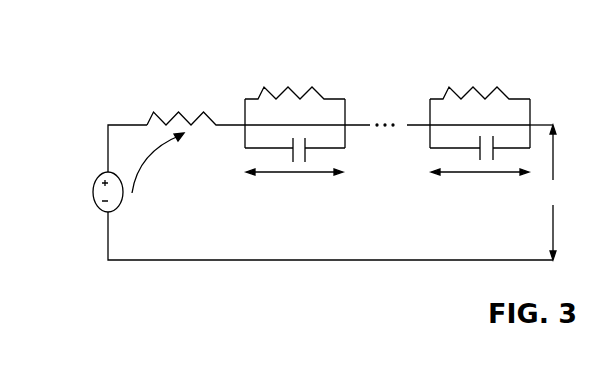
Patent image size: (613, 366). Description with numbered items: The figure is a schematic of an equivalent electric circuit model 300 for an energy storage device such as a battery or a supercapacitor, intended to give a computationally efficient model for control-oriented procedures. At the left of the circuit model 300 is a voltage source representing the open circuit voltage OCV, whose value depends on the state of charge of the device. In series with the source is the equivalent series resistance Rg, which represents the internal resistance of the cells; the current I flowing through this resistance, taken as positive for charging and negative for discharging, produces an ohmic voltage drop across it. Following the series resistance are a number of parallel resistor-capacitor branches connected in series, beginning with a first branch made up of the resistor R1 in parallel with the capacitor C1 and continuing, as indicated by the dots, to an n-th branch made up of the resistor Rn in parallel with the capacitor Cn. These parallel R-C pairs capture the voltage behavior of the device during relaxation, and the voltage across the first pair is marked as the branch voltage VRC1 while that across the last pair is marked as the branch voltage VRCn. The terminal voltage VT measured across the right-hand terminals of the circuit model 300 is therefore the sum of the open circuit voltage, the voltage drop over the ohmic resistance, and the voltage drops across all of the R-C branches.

The equivalent electric circuit model 300 is at (393, 44).
The equivalent series resistance Rg is at (196, 108).
The open circuit voltage OCV is at (87, 192).
The current I is at (158, 163).
The first branch resistor R1 is at (295, 83).
The first branch capacitor C1 is at (295, 139).
The first R-C branch voltage VRC1 is at (294, 185).
The n-th branch resistor Rn is at (480, 83).
The n-th branch capacitor Cn is at (480, 138).
The n-th R-C branch voltage VRCn is at (480, 185).
The terminal voltage VT is at (553, 192).